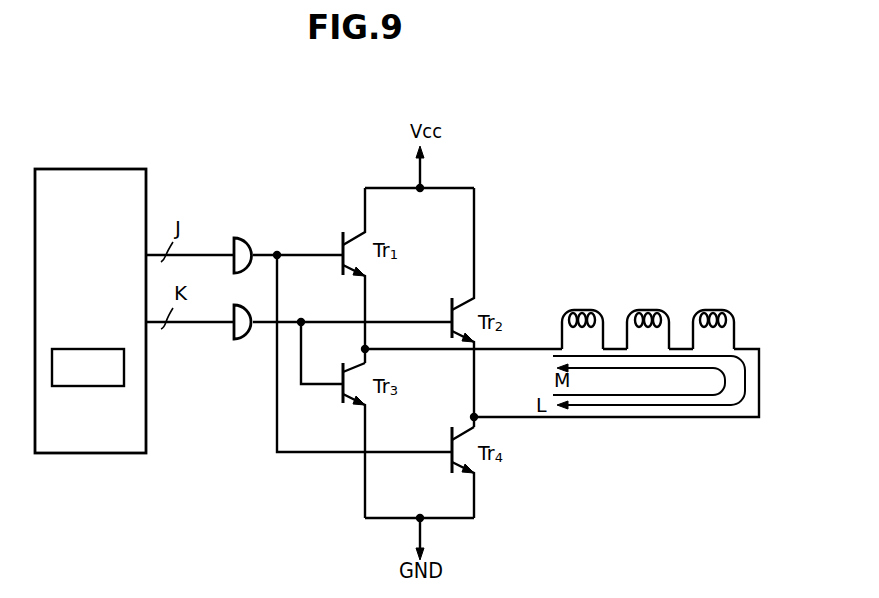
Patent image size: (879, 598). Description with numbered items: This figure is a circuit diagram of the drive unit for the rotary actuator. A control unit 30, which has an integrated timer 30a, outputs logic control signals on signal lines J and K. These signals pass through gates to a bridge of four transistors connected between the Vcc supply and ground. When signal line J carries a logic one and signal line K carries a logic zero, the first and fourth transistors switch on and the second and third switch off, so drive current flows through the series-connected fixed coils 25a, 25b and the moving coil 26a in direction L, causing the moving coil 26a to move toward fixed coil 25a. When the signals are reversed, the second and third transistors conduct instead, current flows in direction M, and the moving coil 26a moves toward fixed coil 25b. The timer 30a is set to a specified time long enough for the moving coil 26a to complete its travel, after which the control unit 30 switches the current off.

The control unit 30 is at (147, 177).
The timer 30a is at (107, 386).
The fixed coil 25a is at (578, 310).
The moving coil 26a is at (651, 310).
The fixed coil 25b is at (717, 310).